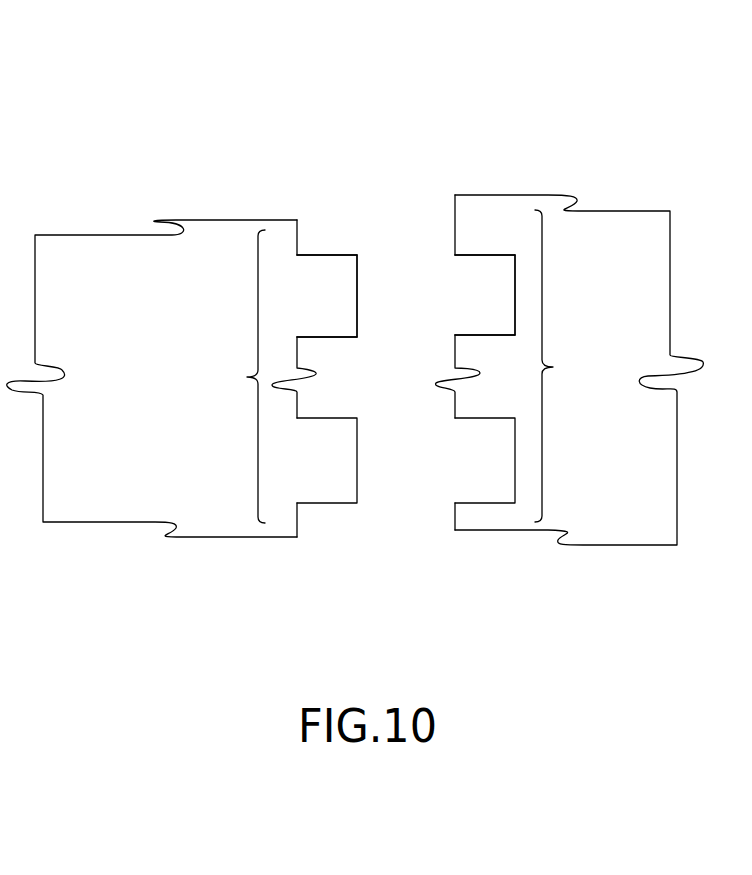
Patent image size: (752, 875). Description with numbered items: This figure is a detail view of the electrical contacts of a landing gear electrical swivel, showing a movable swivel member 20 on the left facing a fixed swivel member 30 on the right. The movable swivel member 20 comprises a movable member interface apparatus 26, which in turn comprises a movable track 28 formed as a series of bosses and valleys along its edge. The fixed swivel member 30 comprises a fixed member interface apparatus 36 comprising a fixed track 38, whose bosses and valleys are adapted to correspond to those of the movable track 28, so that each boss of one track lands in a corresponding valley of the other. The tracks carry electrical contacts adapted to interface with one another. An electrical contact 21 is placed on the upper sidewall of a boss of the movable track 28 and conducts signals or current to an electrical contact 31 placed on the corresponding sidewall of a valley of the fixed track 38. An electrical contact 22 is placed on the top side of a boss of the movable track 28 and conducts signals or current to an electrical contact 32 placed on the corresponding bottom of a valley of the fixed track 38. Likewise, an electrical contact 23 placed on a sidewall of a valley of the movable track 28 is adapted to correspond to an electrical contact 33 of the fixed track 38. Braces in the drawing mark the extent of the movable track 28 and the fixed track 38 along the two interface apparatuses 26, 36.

The movable swivel member 20 is at (87, 177).
The electrical contact 21 is at (312, 255).
The electrical contact 22 is at (357, 263).
The electrical contact 23 is at (342, 345).
The movable member interface apparatus 26 is at (92, 289).
The movable track 28 is at (241, 376).
The fixed swivel member 30 is at (568, 108).
The electrical contact 31 is at (480, 254).
The electrical contact 32 is at (515, 270).
The electrical contact 33 is at (473, 335).
The fixed member interface apparatus 36 is at (637, 289).
The fixed track 38 is at (558, 366).